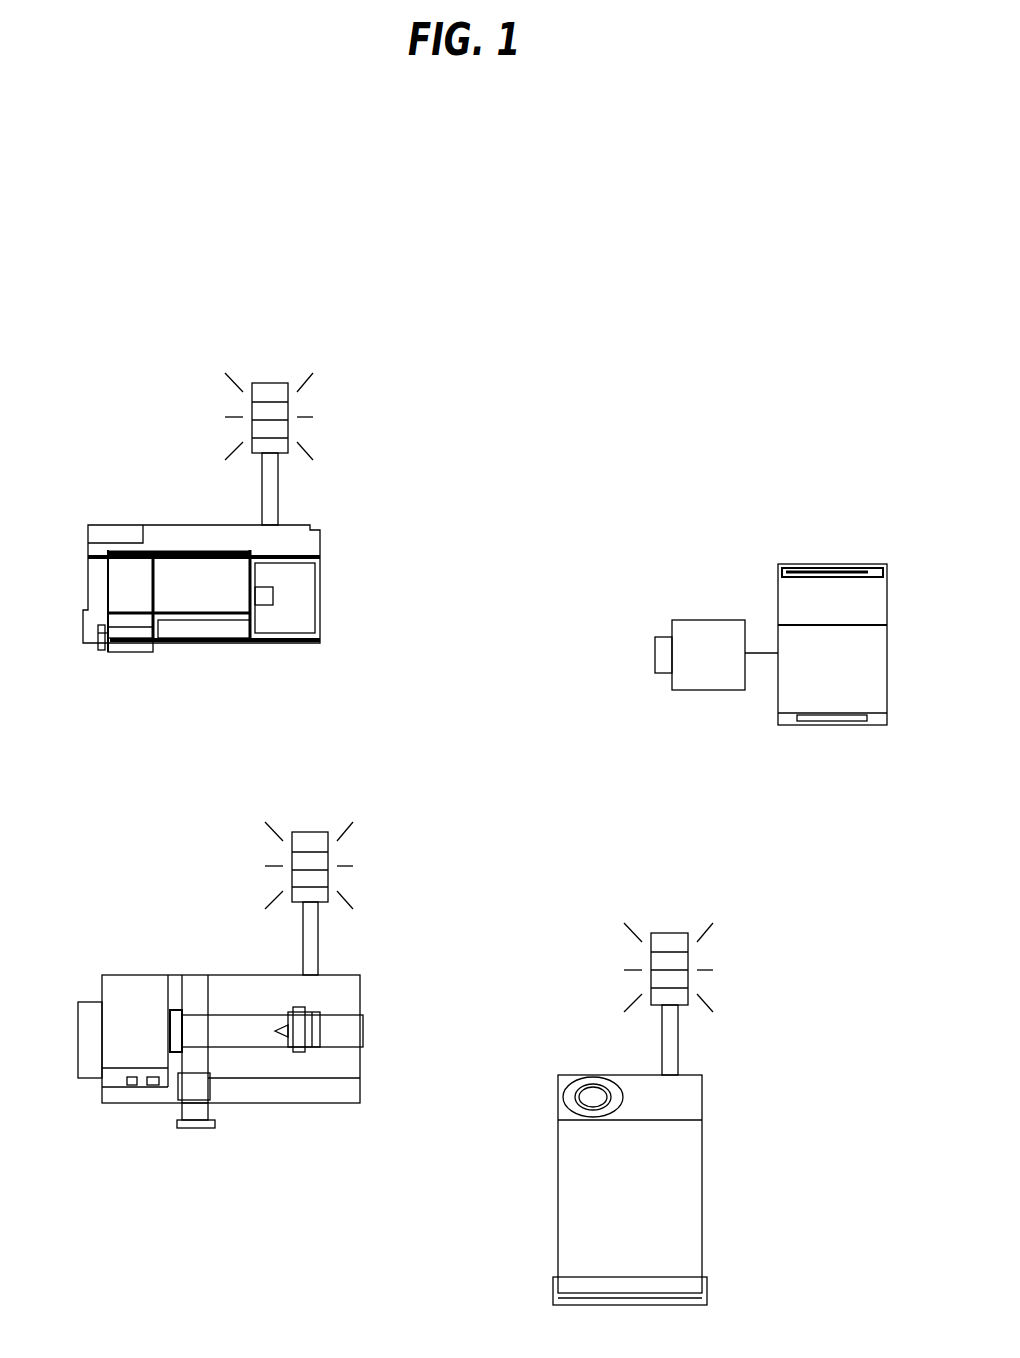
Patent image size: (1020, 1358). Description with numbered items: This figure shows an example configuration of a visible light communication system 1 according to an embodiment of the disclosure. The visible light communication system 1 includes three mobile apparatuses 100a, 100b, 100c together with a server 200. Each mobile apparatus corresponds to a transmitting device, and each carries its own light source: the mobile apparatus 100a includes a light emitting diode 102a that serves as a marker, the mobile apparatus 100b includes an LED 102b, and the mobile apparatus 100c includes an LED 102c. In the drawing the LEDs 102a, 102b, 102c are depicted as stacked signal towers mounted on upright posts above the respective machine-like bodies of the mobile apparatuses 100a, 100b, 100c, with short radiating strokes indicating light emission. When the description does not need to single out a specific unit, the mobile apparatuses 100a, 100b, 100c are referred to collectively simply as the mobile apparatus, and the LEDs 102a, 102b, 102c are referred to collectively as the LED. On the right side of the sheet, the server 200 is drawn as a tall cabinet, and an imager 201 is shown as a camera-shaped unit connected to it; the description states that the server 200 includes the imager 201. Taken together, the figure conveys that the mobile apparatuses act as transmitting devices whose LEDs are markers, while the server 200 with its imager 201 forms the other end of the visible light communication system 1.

The visible light communication system 1 is at (820, 336).
The mobile apparatus 100a is at (118, 525).
The mobile apparatus 100b is at (148, 975).
The mobile apparatus 100c is at (558, 1155).
The light emitting diode (LED) 102a is at (248, 421).
The LED 102b is at (292, 878).
The LED 102c is at (648, 985).
The server 200 is at (830, 562).
The imager 201 is at (707, 620).